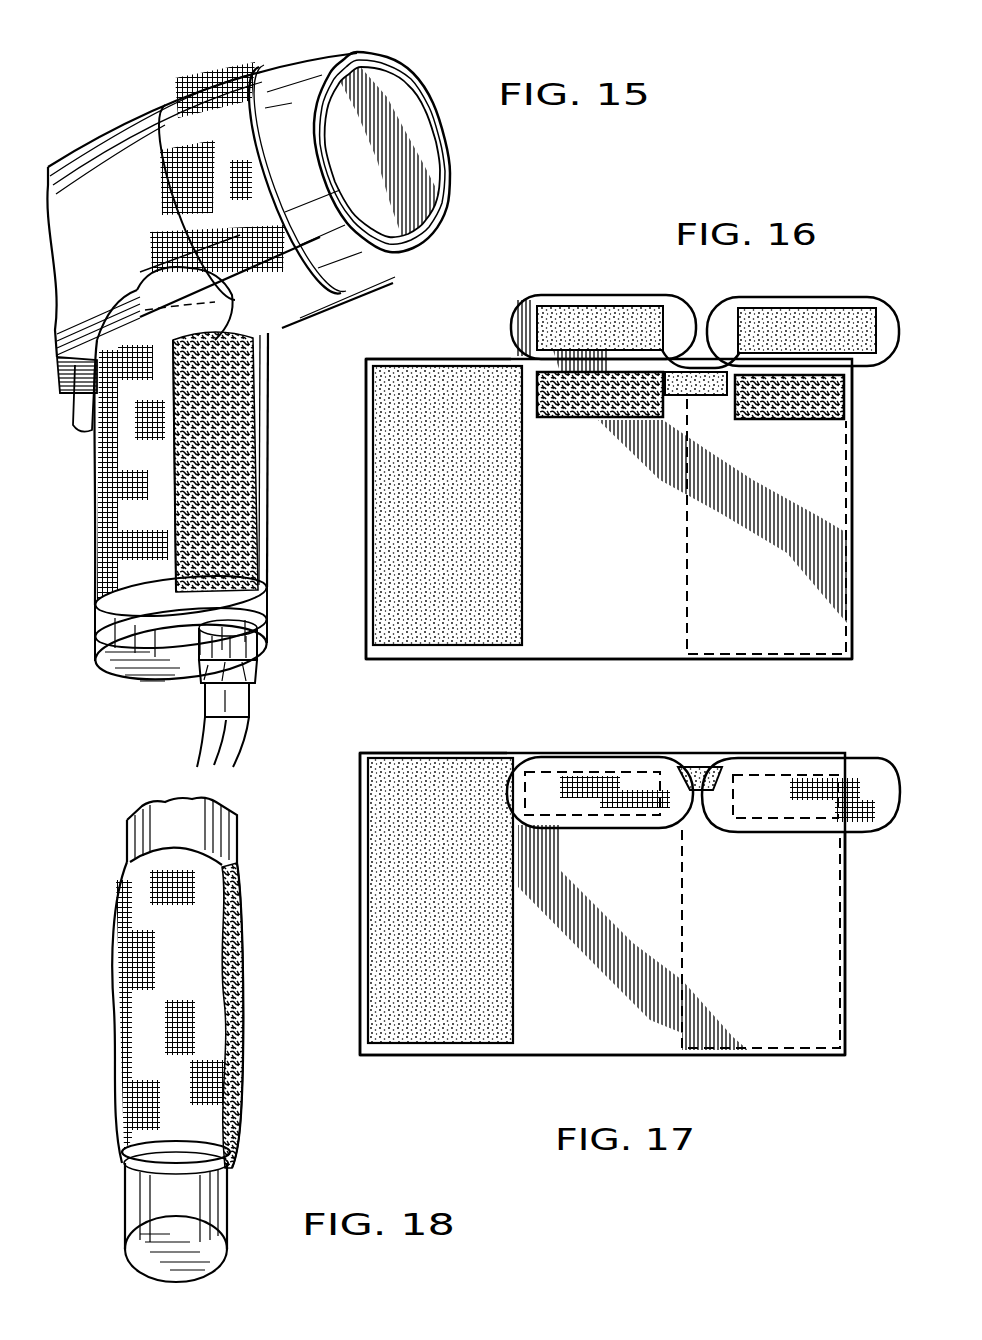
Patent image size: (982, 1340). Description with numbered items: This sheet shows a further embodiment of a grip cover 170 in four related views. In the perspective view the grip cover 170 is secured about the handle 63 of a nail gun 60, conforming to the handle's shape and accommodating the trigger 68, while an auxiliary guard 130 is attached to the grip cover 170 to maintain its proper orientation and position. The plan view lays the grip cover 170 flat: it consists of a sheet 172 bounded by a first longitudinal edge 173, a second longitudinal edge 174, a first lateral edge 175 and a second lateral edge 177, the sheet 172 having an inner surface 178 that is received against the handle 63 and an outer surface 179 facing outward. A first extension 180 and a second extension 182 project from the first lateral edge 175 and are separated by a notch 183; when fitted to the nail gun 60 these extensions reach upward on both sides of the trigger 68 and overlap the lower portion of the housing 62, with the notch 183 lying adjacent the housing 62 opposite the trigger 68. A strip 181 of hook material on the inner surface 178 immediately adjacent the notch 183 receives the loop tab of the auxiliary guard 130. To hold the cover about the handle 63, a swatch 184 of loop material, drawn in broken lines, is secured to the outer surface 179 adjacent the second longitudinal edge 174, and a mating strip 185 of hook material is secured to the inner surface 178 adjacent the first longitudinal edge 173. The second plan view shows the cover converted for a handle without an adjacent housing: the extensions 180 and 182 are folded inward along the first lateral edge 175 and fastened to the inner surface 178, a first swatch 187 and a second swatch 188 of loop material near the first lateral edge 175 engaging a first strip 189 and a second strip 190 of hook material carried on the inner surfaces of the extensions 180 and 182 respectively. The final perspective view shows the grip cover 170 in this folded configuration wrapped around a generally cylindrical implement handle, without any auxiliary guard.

In FIG. 15, the nail gun 60 is at (148, 102).
In FIG. 15, the housing 62 is at (78, 155).
In FIG. 15, the handle 63 is at (152, 672).
In FIG. 15, the trigger 68 is at (80, 420).
In FIG. 15, the auxiliary guard 130 is at (228, 68).
In FIG. 15, the grip cover 170 is at (88, 560).
In FIG. 16, the grip cover 170 is at (568, 262).
In FIG. 17, the grip cover 170 is at (438, 1063).
In FIG. 18, the grip cover 170 is at (112, 1108).
In FIG. 16, the sheet 172 is at (833, 482).
In FIG. 17, the sheet 172 is at (823, 913).
In FIG. 15, the first longitudinal edge 173 is at (255, 432).
In FIG. 16, the first longitudinal edge 173 is at (366, 468).
In FIG. 17, the first longitudinal edge 173 is at (360, 932).
In FIG. 18, the first longitudinal edge 173 is at (242, 877).
In FIG. 16, the second longitudinal edge 174 is at (850, 540).
In FIG. 17, the second longitudinal edge 174 is at (847, 958).
In FIG. 16, the first lateral edge 175 is at (483, 360).
In FIG. 17, the first lateral edge 175 is at (467, 753).
In FIG. 18, the first lateral edge 175 is at (130, 862).
In FIG. 16, the second lateral edge 177 is at (531, 658).
In FIG. 17, the second lateral edge 177 is at (695, 1057).
In FIG. 18, the second lateral edge 177 is at (118, 1183).
In FIG. 16, the inner surface 178 is at (628, 634).
In FIG. 17, the inner surface 178 is at (570, 1037).
In FIG. 15, the outer surface 179 is at (95, 620).
In FIG. 18, the outer surface 179 is at (117, 1035).
In FIG. 16, the first extension 180 is at (535, 278).
In FIG. 17, the first extension 180 is at (540, 757).
In FIG. 16, the strip 181 is at (717, 396).
In FIG. 17, the strip 181 is at (690, 767).
In FIG. 15, the second extension 182 is at (112, 315).
In FIG. 16, the second extension 182 is at (728, 315).
In FIG. 17, the second extension 182 is at (722, 777).
In FIG. 16, the notch 183 is at (700, 355).
In FIG. 16, the swatch 184 is at (687, 540).
In FIG. 17, the swatch 184 is at (682, 880).
In FIG. 16, the strip 185 is at (373, 590).
In FIG. 17, the strip 185 is at (360, 990).
In FIG. 16, the first swatch 187 is at (565, 418).
In FIG. 16, the second swatch 188 is at (786, 420).
In FIG. 16, the first strip 189 is at (621, 304).
In FIG. 16, the second strip 190 is at (835, 316).